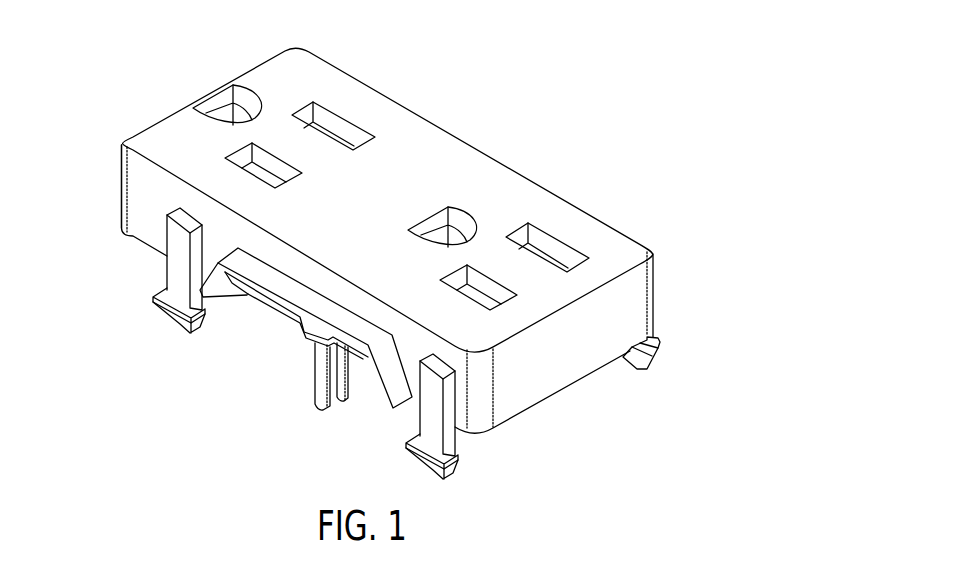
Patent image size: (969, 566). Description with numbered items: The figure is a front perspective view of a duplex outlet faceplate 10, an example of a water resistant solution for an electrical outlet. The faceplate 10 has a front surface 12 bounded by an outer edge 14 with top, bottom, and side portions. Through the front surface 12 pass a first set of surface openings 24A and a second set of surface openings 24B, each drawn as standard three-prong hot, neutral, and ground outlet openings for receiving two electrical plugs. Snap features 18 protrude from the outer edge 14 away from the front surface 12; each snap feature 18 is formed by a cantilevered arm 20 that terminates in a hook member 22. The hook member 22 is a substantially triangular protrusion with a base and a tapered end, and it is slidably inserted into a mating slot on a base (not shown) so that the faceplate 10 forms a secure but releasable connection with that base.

The duplex outlet faceplate 10 is at (490, 117).
The front surface 12 is at (463, 157).
The outer edge 14 is at (135, 190).
The snap features 18 is at (153, 263).
The cantilevered arm 20 is at (184, 277).
The hook member 22 is at (180, 322).
The first set of surface openings 24A is at (557, 253).
The second set of surface openings 24B is at (317, 118).